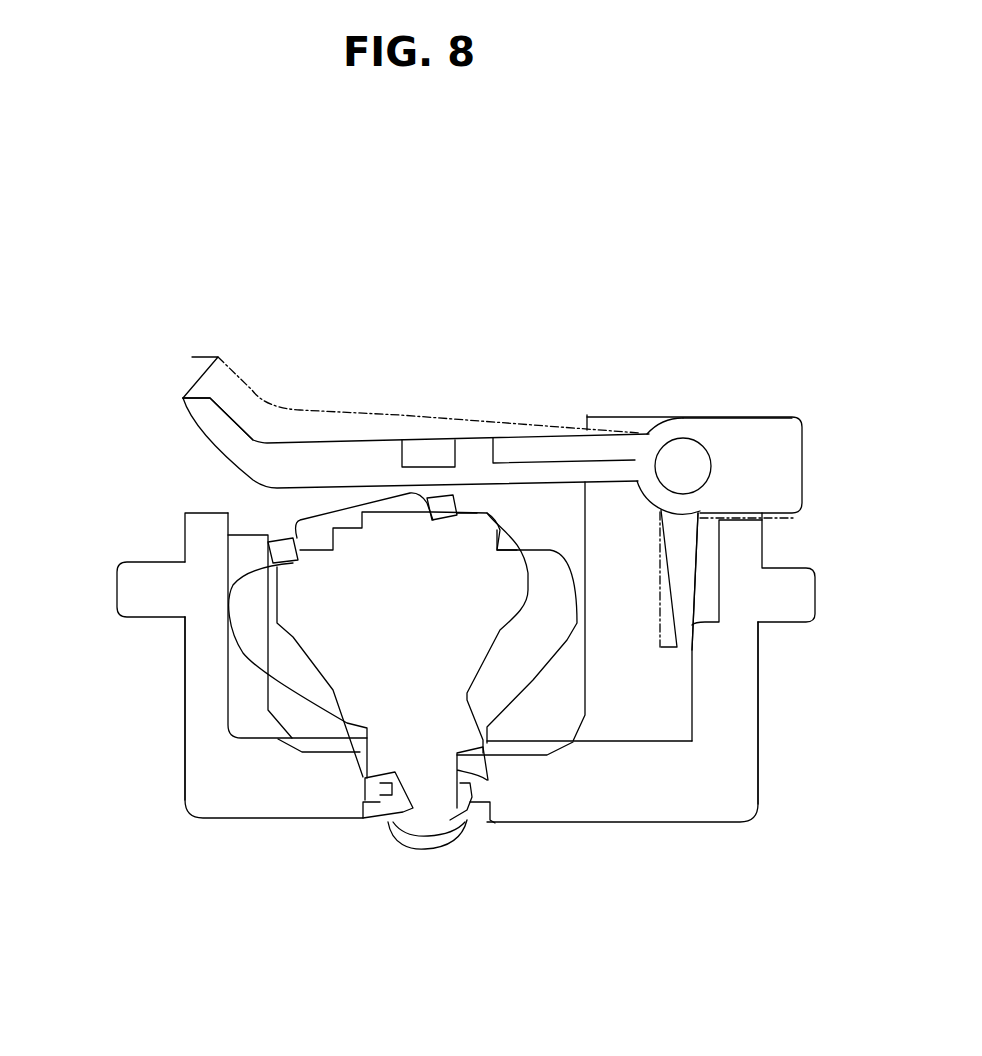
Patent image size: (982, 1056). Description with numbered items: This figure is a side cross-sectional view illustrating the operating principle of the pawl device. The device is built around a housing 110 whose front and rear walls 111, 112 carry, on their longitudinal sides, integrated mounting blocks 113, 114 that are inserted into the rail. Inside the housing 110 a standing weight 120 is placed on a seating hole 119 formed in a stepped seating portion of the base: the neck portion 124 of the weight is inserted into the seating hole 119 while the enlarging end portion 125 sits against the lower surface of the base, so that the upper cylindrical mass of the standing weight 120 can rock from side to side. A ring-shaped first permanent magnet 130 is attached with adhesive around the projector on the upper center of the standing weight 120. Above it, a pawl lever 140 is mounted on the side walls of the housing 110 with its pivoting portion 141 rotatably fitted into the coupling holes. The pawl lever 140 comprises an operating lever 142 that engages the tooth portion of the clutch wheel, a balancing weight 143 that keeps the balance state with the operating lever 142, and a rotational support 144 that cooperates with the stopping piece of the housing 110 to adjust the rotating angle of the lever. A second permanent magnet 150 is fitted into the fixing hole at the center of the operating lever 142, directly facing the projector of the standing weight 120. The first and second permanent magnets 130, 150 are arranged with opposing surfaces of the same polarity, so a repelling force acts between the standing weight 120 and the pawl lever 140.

The housing 110 is at (717, 825).
The front wall 111 is at (186, 672).
The rear wall 112 is at (747, 770).
The mounting block 113 is at (128, 603).
The mounting block 114 is at (788, 617).
The seating hole 119 is at (387, 788).
The standing weight 120 is at (247, 568).
The neck portion 124 is at (485, 775).
The enlarging end portion 125 is at (432, 827).
The first permanent magnet 130 is at (283, 543).
The pawl lever 140 is at (493, 458).
The pivoting portion 141 is at (688, 447).
The operating lever 142 is at (193, 398).
The balancing weight 143 is at (728, 423).
The rotational support 144 is at (688, 567).
The second permanent magnet 150 is at (428, 450).